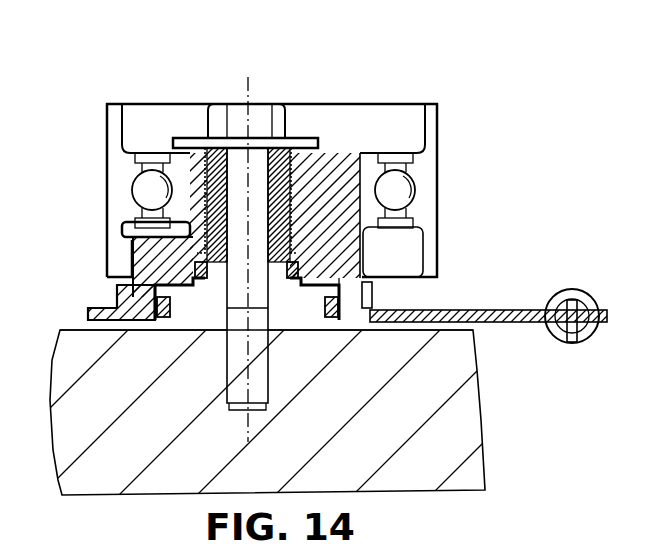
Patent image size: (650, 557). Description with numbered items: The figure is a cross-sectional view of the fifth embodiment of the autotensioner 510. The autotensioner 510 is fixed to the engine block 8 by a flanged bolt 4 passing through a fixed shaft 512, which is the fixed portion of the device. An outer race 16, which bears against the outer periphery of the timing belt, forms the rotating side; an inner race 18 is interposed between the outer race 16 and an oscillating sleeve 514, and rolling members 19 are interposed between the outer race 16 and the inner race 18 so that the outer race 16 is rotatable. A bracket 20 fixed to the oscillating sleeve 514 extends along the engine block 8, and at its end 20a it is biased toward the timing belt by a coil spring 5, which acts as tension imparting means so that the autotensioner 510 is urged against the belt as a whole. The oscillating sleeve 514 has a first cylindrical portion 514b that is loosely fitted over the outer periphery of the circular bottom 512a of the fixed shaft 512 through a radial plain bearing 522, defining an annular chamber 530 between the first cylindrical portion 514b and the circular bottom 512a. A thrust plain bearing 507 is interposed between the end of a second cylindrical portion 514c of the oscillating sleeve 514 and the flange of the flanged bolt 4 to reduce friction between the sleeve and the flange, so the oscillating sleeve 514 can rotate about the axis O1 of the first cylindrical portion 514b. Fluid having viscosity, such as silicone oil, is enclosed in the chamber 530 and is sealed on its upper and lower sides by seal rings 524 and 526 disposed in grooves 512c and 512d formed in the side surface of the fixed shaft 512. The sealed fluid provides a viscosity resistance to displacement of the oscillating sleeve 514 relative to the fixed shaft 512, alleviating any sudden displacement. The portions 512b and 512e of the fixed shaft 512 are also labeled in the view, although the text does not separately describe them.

The autotensioner 510 is at (230, 80).
The flanged bolt 4 is at (258, 104).
The axis O1 is at (251, 244).
The thrust plain bearing 507 is at (207, 160).
The fixed shaft 512 is at (148, 330).
The circular bottom 512a is at (213, 330).
The washer flange 512b is at (290, 150).
The groove 512c is at (197, 322).
The groove 512d is at (172, 330).
The holder inner step 512e is at (268, 338).
The oscillating sleeve 514 is at (325, 160).
The first cylindrical portion 514b is at (135, 242).
The second cylindrical portion 514c is at (385, 150).
The radial plain bearing 522 is at (195, 268).
The seal ring 524 is at (300, 272).
The seal ring 526 is at (332, 310).
The annular chamber 530 is at (272, 300).
The rolling members 19 is at (402, 183).
The outer race 16 is at (428, 202).
The inner race 18 is at (403, 218).
The bracket 20 is at (503, 310).
The end of bracket 20a is at (578, 332).
The coil spring 5 is at (588, 300).
The engine block 8 is at (467, 410).